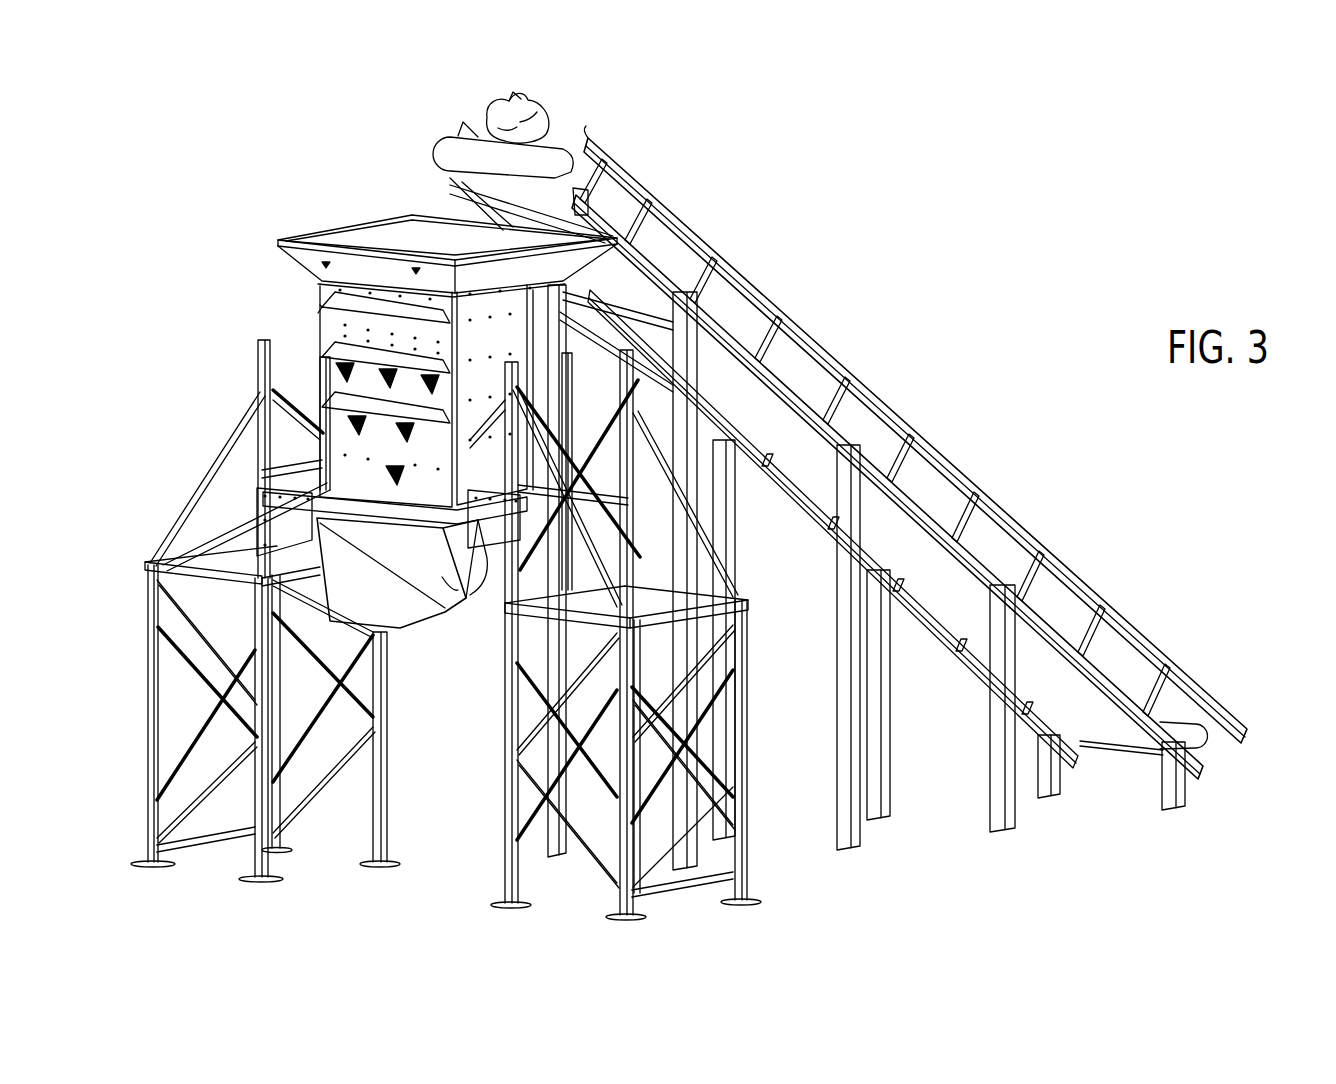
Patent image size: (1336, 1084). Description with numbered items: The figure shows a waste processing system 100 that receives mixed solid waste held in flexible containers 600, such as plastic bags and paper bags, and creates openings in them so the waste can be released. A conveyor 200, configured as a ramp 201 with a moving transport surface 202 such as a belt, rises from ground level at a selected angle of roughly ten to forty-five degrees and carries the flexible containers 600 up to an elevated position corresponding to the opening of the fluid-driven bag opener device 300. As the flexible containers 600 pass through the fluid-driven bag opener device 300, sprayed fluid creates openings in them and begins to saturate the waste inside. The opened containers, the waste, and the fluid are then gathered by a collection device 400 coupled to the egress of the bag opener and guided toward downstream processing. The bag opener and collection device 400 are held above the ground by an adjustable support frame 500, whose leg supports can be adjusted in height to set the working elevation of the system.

The waste processing system 100 is at (392, 127).
The conveyor 200 is at (923, 390).
The ramp 201 is at (733, 300).
The moving transport surface 202 is at (565, 148).
The fluid-driven bag opener device 300 is at (313, 216).
The collection device 400 is at (432, 628).
The adjustable support frame 500 is at (315, 868).
The flexible containers 600 is at (508, 113).